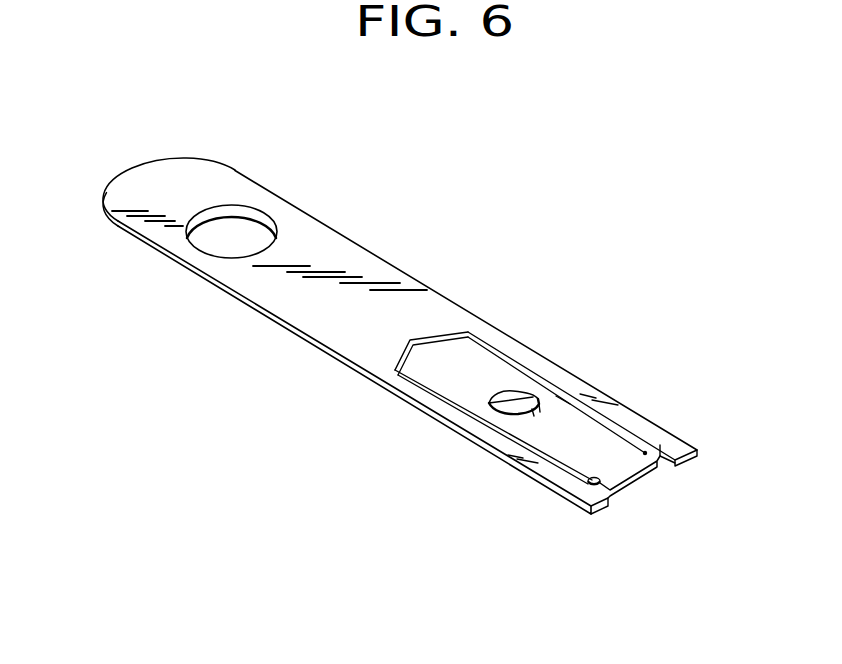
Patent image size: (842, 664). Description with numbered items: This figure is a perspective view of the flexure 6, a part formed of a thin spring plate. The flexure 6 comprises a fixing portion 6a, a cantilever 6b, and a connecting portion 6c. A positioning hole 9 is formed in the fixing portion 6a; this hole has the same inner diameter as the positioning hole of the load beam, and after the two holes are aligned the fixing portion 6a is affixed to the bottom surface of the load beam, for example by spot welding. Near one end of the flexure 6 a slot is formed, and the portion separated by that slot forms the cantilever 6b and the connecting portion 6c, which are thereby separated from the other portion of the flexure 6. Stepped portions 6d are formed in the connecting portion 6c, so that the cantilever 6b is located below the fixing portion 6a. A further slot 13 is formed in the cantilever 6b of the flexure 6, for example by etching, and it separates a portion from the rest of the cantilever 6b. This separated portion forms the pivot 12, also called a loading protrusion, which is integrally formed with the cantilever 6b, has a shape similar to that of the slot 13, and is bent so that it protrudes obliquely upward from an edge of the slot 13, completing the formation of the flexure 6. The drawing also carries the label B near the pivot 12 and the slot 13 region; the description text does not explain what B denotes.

The flexure 6 is at (177, 277).
The fixing portion 6a is at (306, 311).
The cantilever 6b is at (443, 375).
The connecting portion 6c is at (624, 470).
The stepped portions 6d is at (658, 452).
The positioning hole 9 is at (238, 222).
The pivot (loading protrusion) 12 is at (515, 392).
The slot 13 is at (513, 417).
The bonding region B is at (562, 398).